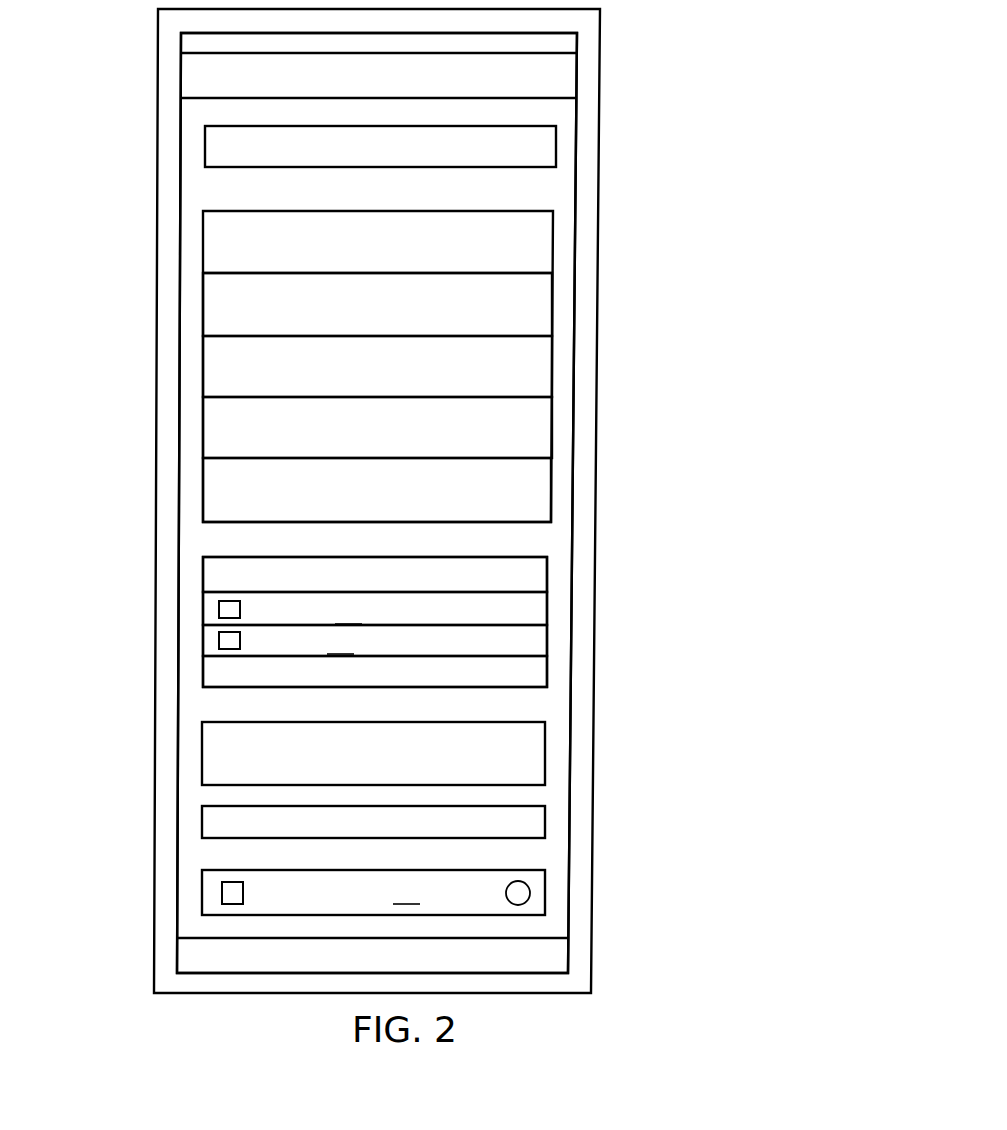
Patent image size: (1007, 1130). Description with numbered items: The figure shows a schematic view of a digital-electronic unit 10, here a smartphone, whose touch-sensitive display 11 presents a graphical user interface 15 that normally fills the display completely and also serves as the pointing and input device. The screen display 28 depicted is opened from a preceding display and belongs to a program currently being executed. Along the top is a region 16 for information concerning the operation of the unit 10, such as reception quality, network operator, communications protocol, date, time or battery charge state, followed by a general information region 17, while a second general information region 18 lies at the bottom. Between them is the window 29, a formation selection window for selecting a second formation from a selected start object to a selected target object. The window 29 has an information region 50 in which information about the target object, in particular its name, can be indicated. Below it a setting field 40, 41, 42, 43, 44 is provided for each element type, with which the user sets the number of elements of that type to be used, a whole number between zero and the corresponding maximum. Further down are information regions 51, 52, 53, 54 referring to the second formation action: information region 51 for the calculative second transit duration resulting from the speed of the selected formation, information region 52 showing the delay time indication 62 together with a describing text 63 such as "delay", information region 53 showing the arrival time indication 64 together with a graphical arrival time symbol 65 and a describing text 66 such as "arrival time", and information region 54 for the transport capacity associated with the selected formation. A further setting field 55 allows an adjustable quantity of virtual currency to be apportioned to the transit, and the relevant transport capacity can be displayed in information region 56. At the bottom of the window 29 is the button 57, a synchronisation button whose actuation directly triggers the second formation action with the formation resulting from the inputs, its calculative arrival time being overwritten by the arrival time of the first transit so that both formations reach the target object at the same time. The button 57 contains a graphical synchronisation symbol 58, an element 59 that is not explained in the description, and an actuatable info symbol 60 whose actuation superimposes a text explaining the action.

The digital-electronic unit 10 is at (598, 482).
The touch-sensitive display 11 is at (178, 384).
The graphical user interface 15 is at (581, 203).
The region for displaying information concerning operation of the unit 16 is at (560, 43).
The general information region 17 is at (558, 78).
The general information region 18 is at (550, 955).
The screen display 28 is at (573, 595).
The formation selection window 29 is at (562, 309).
The setting field 40 is at (553, 242).
The setting field 41 is at (553, 320).
The setting field 42 is at (553, 365).
The setting field 43 is at (553, 428).
The setting field 44 is at (552, 500).
The information region 50 is at (556, 145).
The information region for the calculative second transit duration 51 is at (547, 575).
The information region 52 is at (547, 608).
The information region 53 is at (547, 645).
The information region for transport capacity 54 is at (547, 678).
The further setting field 55 is at (545, 752).
The information region 56 is at (545, 825).
The synchronisation button 57 is at (545, 890).
The graphical synchronisation symbol 58 is at (222, 891).
The label 59 is at (408, 892).
The actuatable info symbol 60 is at (530, 898).
The delay time indication 62 is at (472, 602).
The describing text 63 is at (350, 612).
The arrival time indication 64 is at (219, 606).
The graphical arrival time symbol 65 is at (219, 640).
The describing text 66 is at (342, 642).